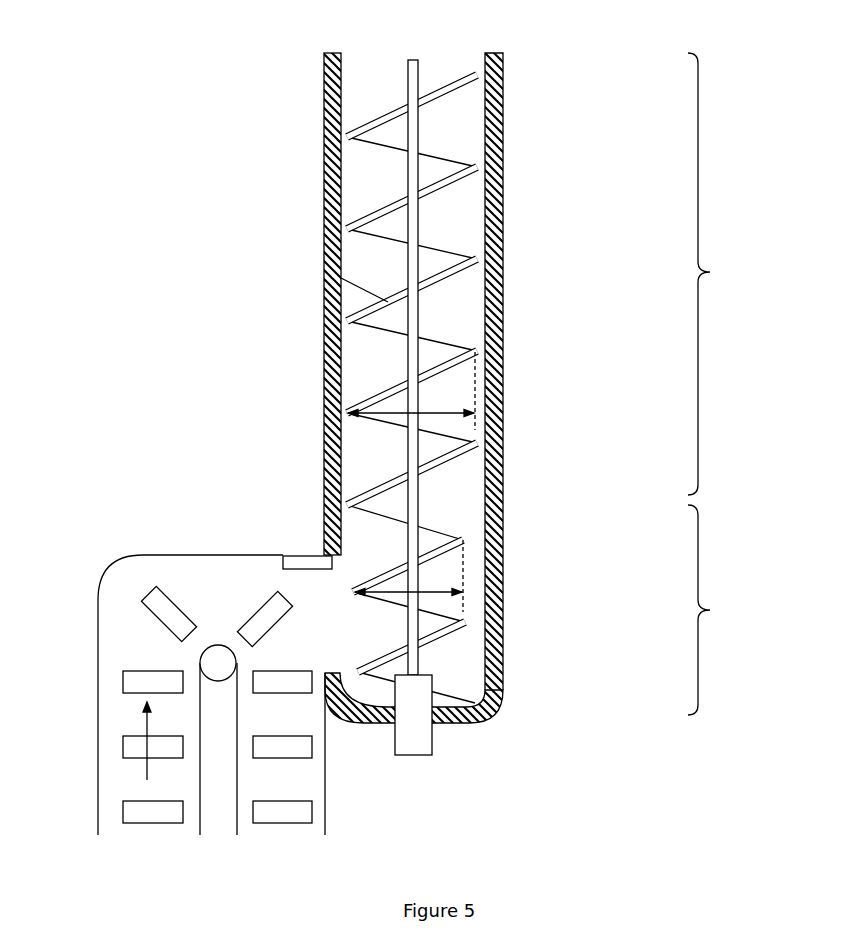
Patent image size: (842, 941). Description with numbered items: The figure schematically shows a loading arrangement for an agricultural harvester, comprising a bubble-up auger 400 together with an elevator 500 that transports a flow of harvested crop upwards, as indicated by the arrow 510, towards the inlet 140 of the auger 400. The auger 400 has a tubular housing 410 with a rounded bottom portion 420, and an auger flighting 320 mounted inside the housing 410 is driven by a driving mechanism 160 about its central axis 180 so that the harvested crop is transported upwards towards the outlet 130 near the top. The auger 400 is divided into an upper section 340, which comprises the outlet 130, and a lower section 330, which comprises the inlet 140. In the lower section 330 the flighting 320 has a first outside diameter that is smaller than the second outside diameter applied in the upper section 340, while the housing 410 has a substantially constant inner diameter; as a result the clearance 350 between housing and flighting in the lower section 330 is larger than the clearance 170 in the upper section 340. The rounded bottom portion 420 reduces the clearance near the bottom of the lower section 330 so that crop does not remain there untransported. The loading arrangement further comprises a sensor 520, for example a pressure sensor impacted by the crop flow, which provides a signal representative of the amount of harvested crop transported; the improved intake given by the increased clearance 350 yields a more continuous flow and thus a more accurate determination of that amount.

The auger 400 is at (198, 117).
The outlet 130 is at (442, 53).
The auger flighting 320 is at (327, 273).
The housing 410 is at (502, 248).
The clearance 170 is at (477, 352).
The central axis 180 is at (410, 445).
The sensor 520 is at (307, 556).
The elevator 500 is at (223, 660).
The inlet 140 is at (335, 620).
The arrow 510 is at (147, 772).
The clearance 350 is at (477, 542).
The rounded bottom portion 420 is at (480, 707).
The driving mechanism 160 is at (432, 730).
The upper section 340 is at (722, 274).
The lower section 330 is at (726, 610).